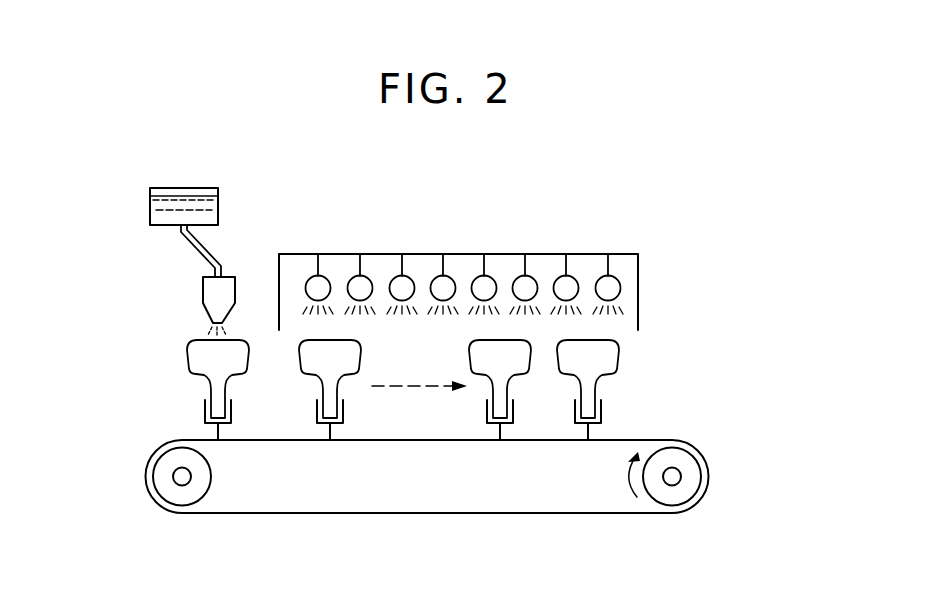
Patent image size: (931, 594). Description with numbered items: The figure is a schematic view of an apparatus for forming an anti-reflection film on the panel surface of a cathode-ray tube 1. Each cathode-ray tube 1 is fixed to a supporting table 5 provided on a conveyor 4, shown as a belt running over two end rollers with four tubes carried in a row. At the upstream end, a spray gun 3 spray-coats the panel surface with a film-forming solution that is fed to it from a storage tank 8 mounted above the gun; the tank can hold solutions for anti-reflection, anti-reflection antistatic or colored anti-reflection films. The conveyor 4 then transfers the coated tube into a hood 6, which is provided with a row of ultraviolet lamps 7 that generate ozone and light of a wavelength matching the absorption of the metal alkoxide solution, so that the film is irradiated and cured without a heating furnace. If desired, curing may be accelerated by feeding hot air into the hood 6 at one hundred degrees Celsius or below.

The cathode-ray tube 1 is at (607, 363).
The spray gun 3 is at (213, 293).
The conveyor 4 is at (710, 470).
The supporting table 5 is at (605, 411).
The hood 6 is at (590, 254).
The ultraviolet lamp 7 is at (434, 297).
The storage tank for film-forming solution 8 is at (214, 212).